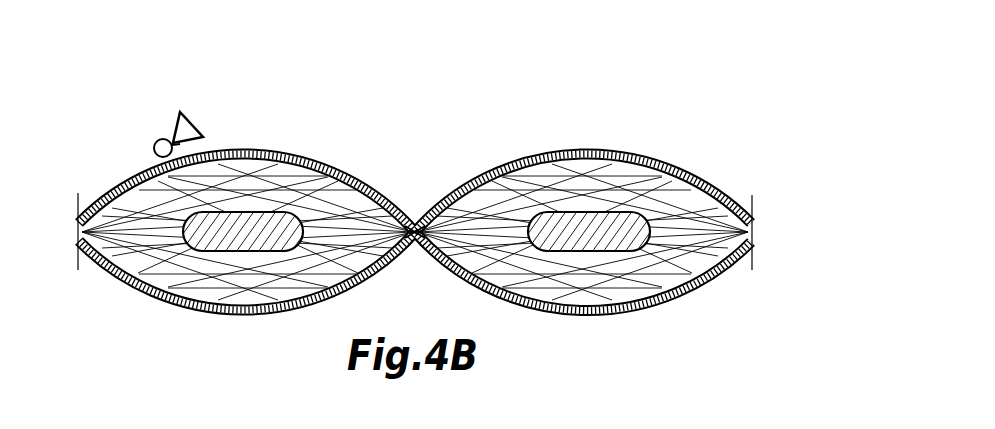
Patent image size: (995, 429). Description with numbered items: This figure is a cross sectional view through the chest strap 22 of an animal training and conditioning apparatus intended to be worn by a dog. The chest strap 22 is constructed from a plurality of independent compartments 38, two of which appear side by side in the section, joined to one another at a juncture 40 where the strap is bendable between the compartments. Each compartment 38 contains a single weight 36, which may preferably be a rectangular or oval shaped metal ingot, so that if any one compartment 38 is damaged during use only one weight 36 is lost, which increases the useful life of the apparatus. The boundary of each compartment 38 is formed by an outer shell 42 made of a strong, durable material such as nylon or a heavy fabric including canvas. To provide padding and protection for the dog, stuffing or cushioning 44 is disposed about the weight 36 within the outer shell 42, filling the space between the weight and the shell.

The chest strap 22 is at (565, 131).
The weight 36 is at (278, 213).
The compartment 38 is at (198, 282).
The juncture 40 is at (415, 238).
The outer shell 42 is at (243, 148).
The cushioning 44 is at (680, 193).